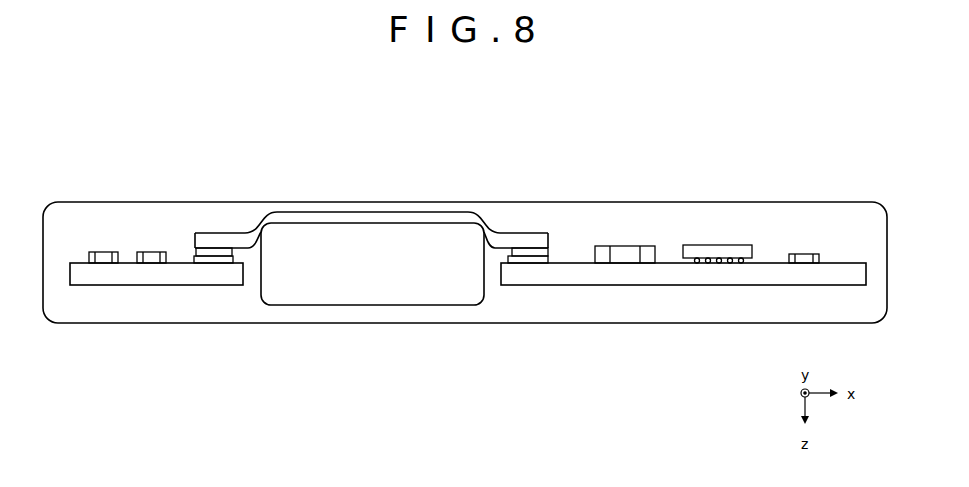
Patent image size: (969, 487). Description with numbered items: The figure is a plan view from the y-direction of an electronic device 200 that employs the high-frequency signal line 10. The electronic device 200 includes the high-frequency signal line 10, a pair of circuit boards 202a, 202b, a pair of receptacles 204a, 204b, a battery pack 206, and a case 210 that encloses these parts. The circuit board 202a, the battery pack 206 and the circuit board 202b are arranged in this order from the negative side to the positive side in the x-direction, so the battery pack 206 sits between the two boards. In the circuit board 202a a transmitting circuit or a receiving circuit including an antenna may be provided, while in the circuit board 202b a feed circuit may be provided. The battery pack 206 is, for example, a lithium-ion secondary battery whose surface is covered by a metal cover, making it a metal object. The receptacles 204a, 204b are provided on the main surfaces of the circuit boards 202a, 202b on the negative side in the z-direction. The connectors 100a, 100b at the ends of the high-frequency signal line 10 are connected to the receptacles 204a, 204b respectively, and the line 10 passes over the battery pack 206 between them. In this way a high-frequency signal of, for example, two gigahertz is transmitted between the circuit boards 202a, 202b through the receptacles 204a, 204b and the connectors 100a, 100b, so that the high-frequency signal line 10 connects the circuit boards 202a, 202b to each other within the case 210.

The electronic device 200 is at (186, 100).
The case 210 is at (132, 203).
The high-frequency signal line 10 is at (371, 257).
The connector 100a is at (221, 273).
The connector 100b is at (538, 273).
The circuit board 202a is at (130, 272).
The circuit board 202b is at (683, 273).
The receptacle 204a is at (216, 262).
The receptacle 204b is at (528, 258).
The battery pack 206 is at (343, 272).